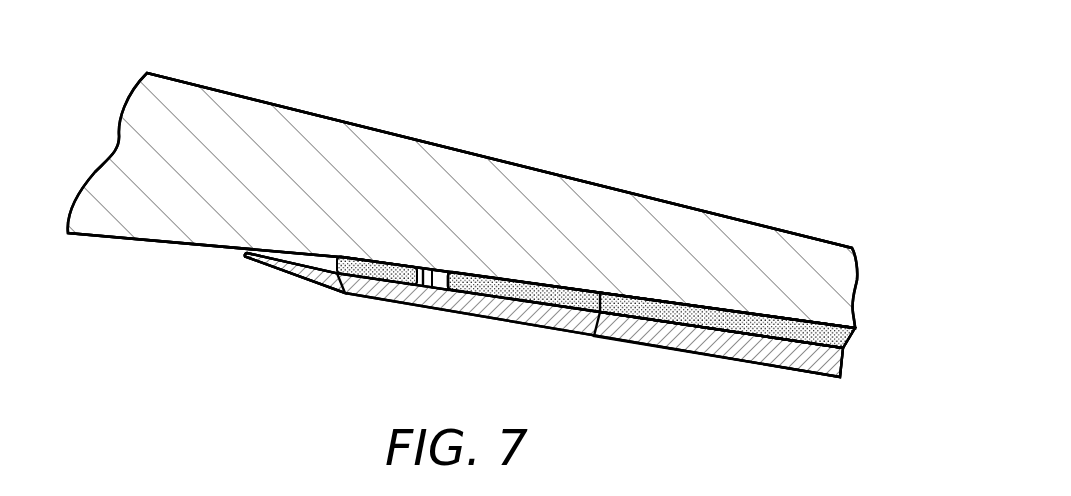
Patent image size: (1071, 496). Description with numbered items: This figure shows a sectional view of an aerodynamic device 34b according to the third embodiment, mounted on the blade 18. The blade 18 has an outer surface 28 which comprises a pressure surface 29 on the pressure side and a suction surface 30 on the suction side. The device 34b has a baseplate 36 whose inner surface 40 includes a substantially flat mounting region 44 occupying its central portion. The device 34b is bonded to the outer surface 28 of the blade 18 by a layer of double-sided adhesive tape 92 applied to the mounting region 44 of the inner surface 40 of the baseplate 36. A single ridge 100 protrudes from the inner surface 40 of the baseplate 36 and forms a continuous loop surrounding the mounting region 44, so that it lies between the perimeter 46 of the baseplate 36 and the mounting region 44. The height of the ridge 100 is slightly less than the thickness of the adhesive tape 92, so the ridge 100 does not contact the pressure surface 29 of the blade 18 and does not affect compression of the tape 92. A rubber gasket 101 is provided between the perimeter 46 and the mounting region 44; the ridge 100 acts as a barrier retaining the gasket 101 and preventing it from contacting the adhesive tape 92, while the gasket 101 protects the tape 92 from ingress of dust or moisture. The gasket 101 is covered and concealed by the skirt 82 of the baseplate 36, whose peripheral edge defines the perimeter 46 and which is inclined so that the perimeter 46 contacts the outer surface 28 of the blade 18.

The blade 18 is at (112, 101).
The outer surface 28 is at (596, 170).
The pressure surface 29 is at (98, 239).
The suction surface 30 is at (326, 113).
The aerodynamic device 34b is at (650, 364).
The baseplate 36 is at (696, 343).
The inner surface 40 is at (748, 342).
The mounting region 44 is at (588, 319).
The perimeter 46 is at (246, 258).
The skirt 82 is at (296, 273).
The double-sided adhesive tape 92 is at (530, 290).
The single ridge 100 is at (425, 289).
The rubber gasket 101 is at (347, 278).